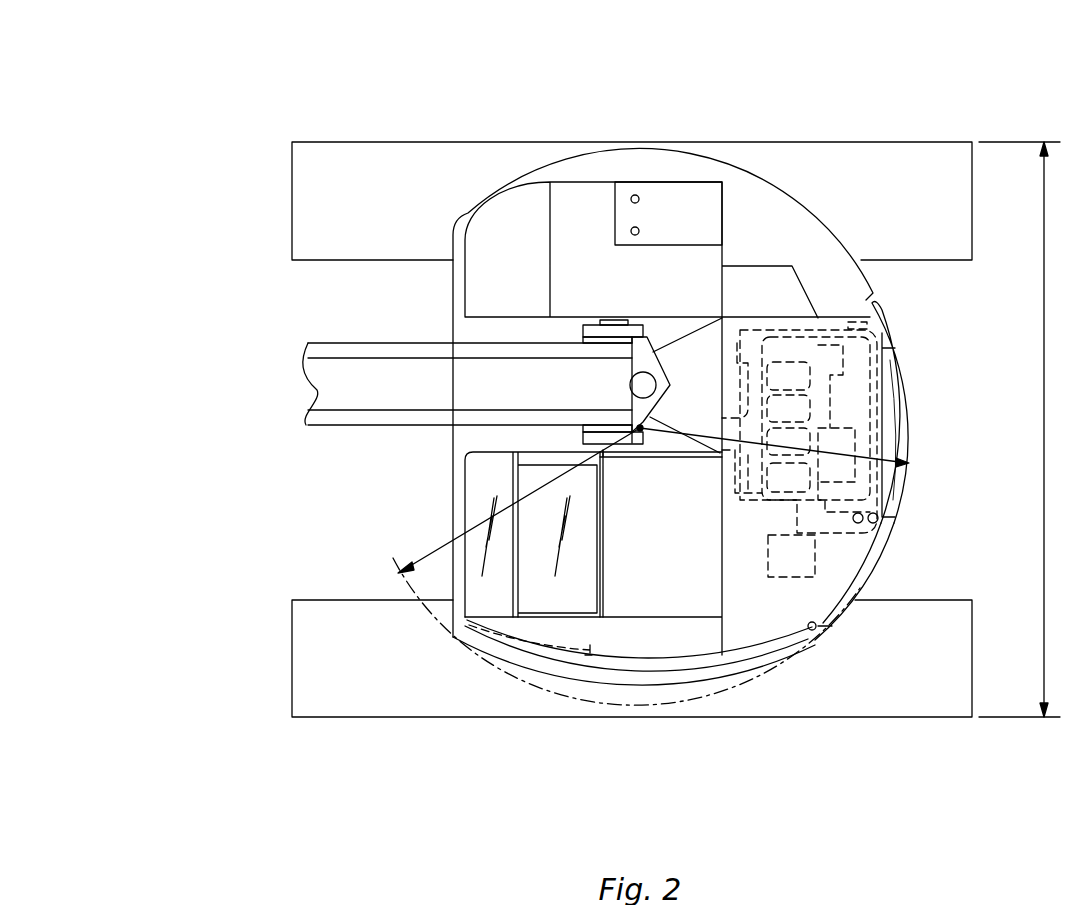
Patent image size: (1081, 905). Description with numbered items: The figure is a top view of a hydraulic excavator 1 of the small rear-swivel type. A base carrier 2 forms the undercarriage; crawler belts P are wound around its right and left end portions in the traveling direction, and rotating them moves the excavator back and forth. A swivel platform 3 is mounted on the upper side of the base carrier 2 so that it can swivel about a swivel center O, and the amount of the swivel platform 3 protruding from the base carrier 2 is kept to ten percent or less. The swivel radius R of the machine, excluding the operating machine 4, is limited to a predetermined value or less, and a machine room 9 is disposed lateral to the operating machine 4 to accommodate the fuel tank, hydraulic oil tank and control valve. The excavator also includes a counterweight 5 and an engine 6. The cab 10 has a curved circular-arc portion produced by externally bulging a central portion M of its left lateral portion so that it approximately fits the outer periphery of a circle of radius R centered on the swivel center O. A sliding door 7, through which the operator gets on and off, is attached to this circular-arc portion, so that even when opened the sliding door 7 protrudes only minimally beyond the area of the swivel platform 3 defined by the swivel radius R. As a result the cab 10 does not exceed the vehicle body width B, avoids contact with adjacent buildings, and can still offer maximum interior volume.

The hydraulic excavator 1 is at (152, 86).
The base carrier 2 is at (262, 188).
The swivel platform 3 is at (775, 620).
The operating machine 4 is at (402, 342).
The counterweight 5 is at (909, 344).
The engine 6 is at (797, 412).
The sliding door 7 is at (528, 642).
The machine room 9 is at (668, 200).
The cab 10 is at (462, 498).
The swivel center O is at (641, 432).
The swivel radius R is at (655, 566).
The central portion M is at (660, 672).
The crawler belts P is at (849, 683).
The vehicle body width B is at (1019, 429).